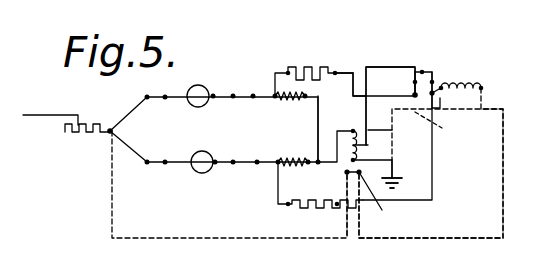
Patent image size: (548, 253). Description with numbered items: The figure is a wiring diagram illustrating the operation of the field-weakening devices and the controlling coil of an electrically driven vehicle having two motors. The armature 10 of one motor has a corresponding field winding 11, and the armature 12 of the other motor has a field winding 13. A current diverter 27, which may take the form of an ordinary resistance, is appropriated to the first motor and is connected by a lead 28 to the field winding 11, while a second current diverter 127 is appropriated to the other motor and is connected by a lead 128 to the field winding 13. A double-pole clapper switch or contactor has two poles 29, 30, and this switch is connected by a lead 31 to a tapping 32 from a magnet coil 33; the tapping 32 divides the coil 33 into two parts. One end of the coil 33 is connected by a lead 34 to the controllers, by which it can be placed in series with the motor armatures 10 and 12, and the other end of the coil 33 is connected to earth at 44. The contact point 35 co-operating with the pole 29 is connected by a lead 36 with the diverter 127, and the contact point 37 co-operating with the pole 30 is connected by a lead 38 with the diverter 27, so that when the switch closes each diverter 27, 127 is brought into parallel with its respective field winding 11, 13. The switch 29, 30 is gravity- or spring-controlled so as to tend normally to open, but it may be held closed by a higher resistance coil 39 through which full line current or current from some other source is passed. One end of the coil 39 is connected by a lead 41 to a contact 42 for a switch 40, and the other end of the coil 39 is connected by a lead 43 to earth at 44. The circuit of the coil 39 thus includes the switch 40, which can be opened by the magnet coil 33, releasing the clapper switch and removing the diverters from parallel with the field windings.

The armature 10 is at (199, 85).
The armature 12 is at (200, 158).
The lead 28 is at (273, 80).
The field winding 11 is at (287, 72).
The current diverter 27 is at (302, 71).
The lead 31 is at (367, 90).
The lead 38 is at (353, 90).
The contact point 37 is at (414, 94).
The pole 29 is at (415, 80).
The pole 30 is at (433, 82).
The contact point 35 is at (434, 95).
The higher resistance coil 39 is at (466, 80).
The magnet coil 33 is at (352, 130).
The tapping 32 is at (392, 130).
The lead 43 is at (442, 128).
The earth 44 is at (392, 172).
The lead 36 is at (433, 183).
The lead 41 is at (432, 238).
The contact 42 is at (379, 202).
The field winding 13 is at (283, 160).
The lead 34 is at (318, 138).
The lead 128 is at (278, 188).
The current diverter 127 is at (310, 207).
The switch 40 is at (347, 174).